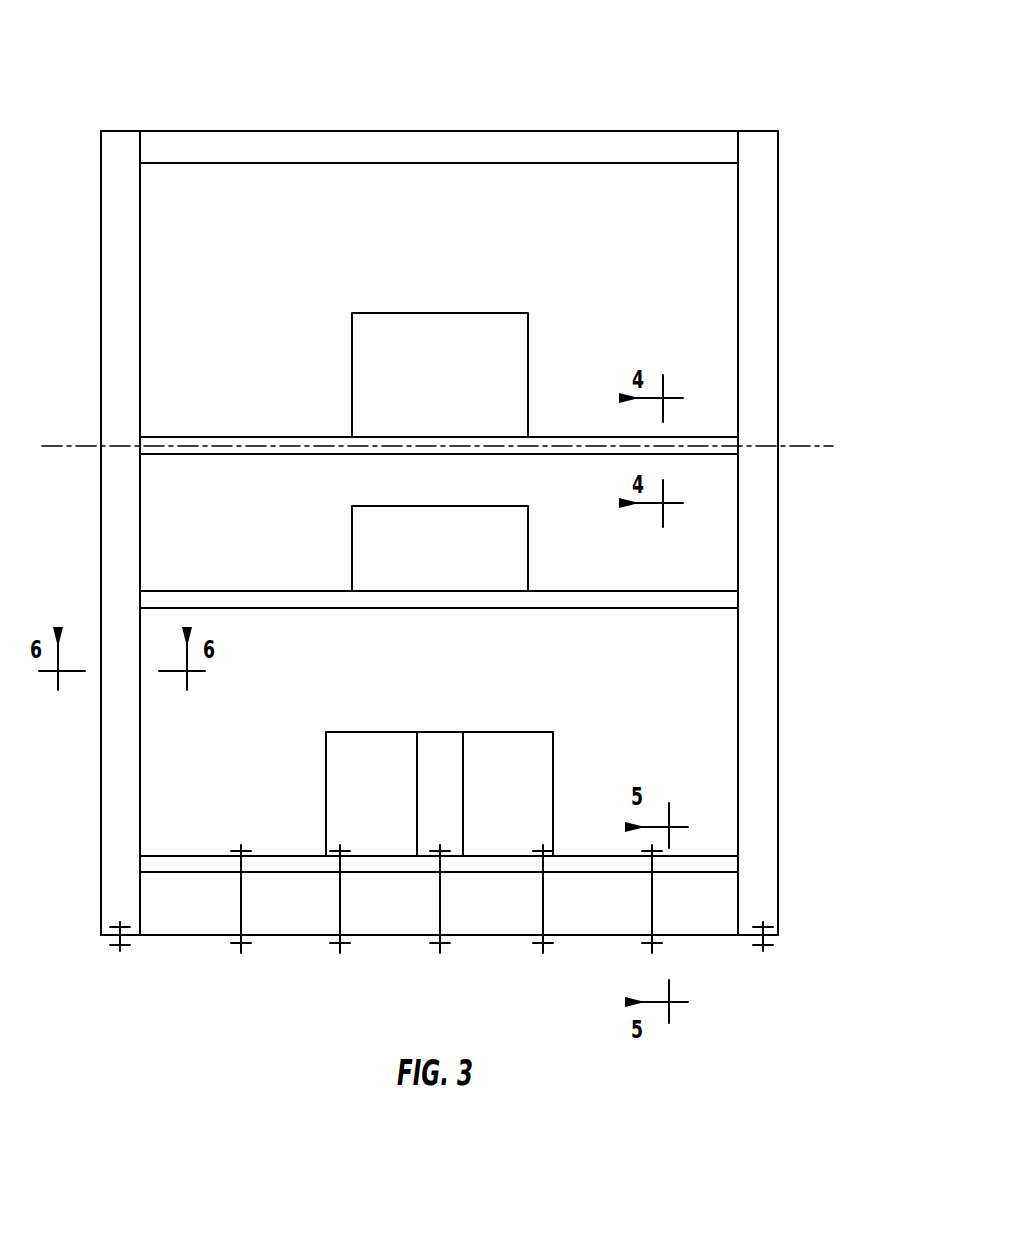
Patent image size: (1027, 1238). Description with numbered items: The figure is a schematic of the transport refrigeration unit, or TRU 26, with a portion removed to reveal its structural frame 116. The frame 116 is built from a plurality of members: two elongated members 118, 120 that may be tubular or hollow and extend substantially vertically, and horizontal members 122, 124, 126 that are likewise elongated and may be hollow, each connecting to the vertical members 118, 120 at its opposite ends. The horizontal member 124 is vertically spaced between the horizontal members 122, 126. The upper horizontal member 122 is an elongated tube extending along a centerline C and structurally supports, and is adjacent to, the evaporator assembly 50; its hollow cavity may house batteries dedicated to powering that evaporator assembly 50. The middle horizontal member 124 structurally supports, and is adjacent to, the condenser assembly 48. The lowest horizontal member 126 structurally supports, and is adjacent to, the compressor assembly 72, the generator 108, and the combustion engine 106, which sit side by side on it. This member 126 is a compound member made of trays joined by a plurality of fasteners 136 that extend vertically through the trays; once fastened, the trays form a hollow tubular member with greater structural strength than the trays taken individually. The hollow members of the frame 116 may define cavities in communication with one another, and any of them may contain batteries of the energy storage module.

The transport refrigeration unit 26 is at (116, 91).
The structural frame 116 is at (637, 122).
The vertical member 118 is at (101, 315).
The vertical member 120 is at (778, 388).
The horizontal member 122 is at (175, 435).
The horizontal member 124 is at (175, 590).
The horizontal member 126 is at (176, 856).
The centerline C is at (790, 446).
The evaporator assembly 50 is at (456, 387).
The condenser assembly 48 is at (456, 558).
The combustion engine 106 is at (391, 805).
The generator 108 is at (459, 805).
The compressor assembly 72 is at (518, 805).
The fasteners 136 is at (440, 898).